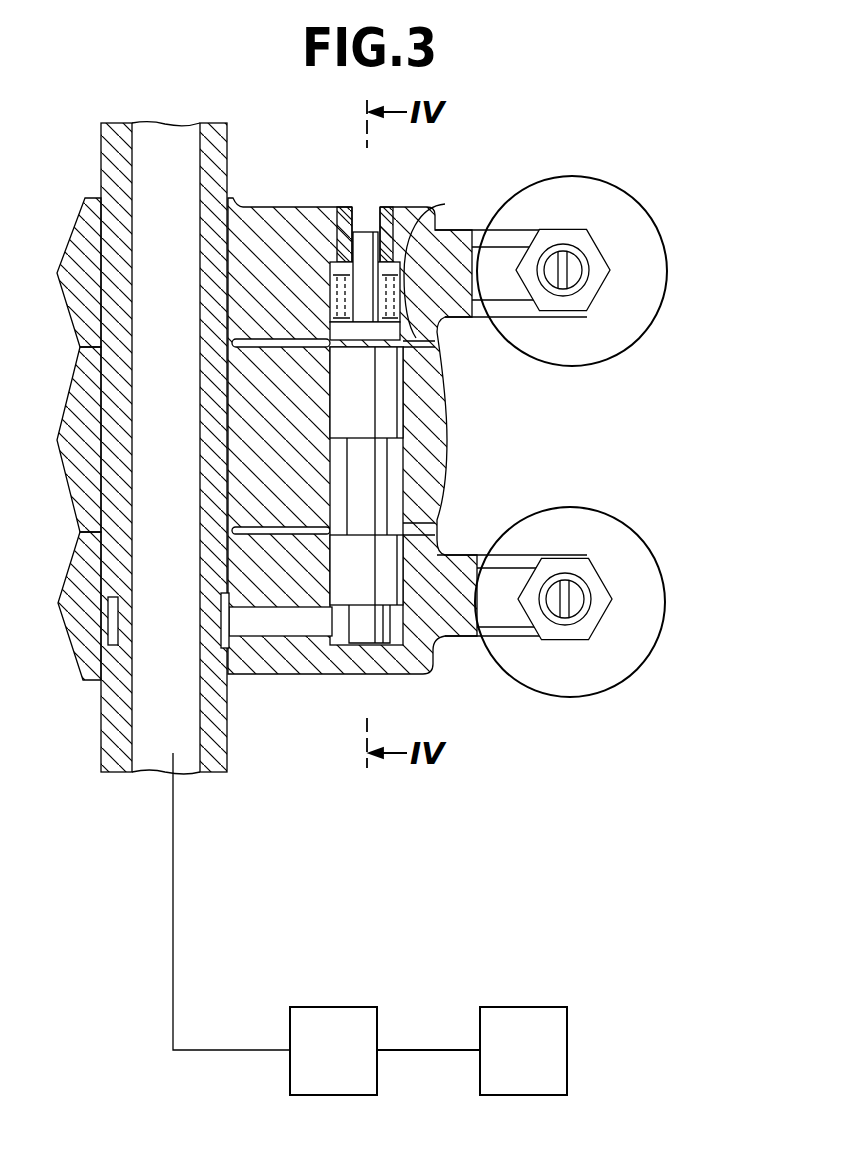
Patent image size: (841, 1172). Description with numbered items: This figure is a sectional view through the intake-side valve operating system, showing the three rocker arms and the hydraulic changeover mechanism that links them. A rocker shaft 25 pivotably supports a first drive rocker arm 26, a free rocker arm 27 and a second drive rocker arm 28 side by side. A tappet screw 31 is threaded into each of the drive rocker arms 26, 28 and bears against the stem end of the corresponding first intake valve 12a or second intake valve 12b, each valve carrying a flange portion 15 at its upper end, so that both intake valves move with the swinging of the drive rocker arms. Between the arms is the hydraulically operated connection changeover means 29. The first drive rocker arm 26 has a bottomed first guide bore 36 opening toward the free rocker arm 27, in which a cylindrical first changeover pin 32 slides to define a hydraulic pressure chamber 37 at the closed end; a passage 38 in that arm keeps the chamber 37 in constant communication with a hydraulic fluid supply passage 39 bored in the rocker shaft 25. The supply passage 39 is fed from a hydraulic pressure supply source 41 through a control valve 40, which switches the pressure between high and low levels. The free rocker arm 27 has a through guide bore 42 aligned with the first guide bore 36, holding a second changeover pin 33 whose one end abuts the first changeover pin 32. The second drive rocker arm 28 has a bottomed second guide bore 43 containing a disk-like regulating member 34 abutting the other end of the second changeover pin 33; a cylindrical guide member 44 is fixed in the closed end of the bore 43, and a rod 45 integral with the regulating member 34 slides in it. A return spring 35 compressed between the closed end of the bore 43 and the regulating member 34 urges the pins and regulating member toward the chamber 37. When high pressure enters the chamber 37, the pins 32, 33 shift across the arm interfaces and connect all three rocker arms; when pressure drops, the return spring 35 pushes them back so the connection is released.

The rocker shaft 25 is at (107, 162).
The second drive rocker arm 28 is at (265, 217).
The free rocker arm 27 is at (440, 423).
The first drive rocker arm 26 is at (307, 660).
The rod 45 is at (366, 230).
The guide member 44 is at (384, 204).
The regulating member 34 is at (418, 348).
The second guide bore 43 is at (410, 334).
The hydraulically operated connection changeover means 29 is at (409, 382).
The second changeover pin 33 is at (369, 403).
The guide bore 42 is at (400, 468).
The first changeover pin 32 is at (364, 575).
The hydraulic pressure chamber 37 is at (343, 645).
The passage 38 is at (278, 618).
The hydraulic fluid supply passage 39 is at (180, 438).
The return spring 35 is at (495, 257).
The first guide bore 36 is at (397, 552).
The second intake valve 12b is at (645, 215).
The first intake valve 12a is at (654, 555).
The flange portion 15 is at (578, 716).
The tappet screw 31 is at (580, 268).
The control valve 40 is at (345, 1070).
The hydraulic pressure supply source 41 is at (533, 1070).